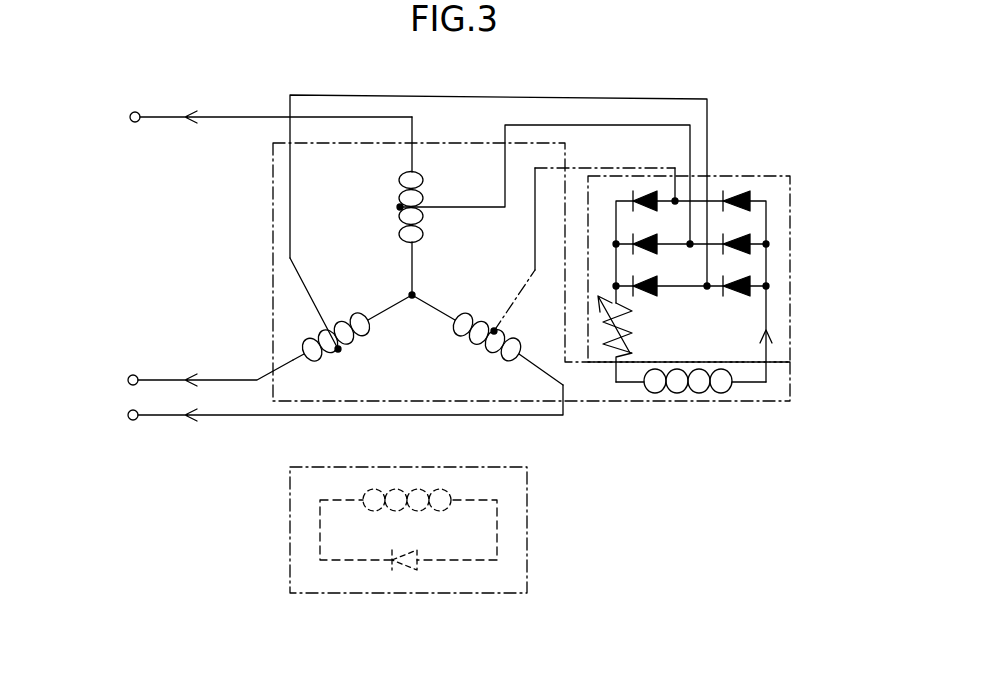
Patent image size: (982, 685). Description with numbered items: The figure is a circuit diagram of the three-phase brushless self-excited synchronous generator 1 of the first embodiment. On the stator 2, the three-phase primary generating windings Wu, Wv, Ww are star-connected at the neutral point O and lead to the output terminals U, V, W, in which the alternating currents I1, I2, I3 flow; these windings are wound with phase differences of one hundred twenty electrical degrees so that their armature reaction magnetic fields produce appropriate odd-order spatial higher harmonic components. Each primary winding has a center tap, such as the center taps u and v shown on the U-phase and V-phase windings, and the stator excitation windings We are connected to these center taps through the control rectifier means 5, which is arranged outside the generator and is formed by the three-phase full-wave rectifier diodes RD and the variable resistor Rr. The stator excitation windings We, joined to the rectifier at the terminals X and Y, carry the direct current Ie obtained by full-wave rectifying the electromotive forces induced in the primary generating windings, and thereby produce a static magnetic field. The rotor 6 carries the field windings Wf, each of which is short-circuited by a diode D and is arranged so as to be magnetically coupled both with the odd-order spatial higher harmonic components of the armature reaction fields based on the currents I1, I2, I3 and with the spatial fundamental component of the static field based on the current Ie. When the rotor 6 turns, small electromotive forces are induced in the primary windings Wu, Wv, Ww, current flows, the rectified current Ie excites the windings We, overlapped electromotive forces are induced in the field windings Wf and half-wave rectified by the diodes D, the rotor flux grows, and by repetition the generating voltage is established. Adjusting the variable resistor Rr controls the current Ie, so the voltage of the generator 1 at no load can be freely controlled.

The generator 1 is at (249, 104).
The stator 2 is at (272, 211).
The control rectifier means 5 is at (793, 283).
The rotor 6 is at (289, 534).
The U-phase terminal U is at (121, 117).
The V-phase terminal V is at (120, 415).
The W-phase terminal W is at (118, 380).
The current in primary generating winding I1 is at (276, 101).
The current in primary generating winding I2 is at (350, 420).
The current in primary generating winding I3 is at (215, 364).
The U-phase primary generating winding Wu is at (398, 167).
The V-phase primary generating winding Wv is at (487, 344).
The W-phase primary generating winding Ww is at (339, 351).
The center tap u is at (399, 207).
The center tap v is at (493, 329).
The neutral point O is at (424, 283).
The three-phase full-wave rectifier diodes RD is at (746, 198).
The variable resistor Rr is at (615, 355).
The stator excitation current Ie is at (752, 342).
The stator excitation windings We is at (718, 395).
The exciter terminal X is at (767, 382).
The exciter terminal Y is at (616, 365).
The field winding Wf is at (432, 487).
The diode D is at (403, 577).